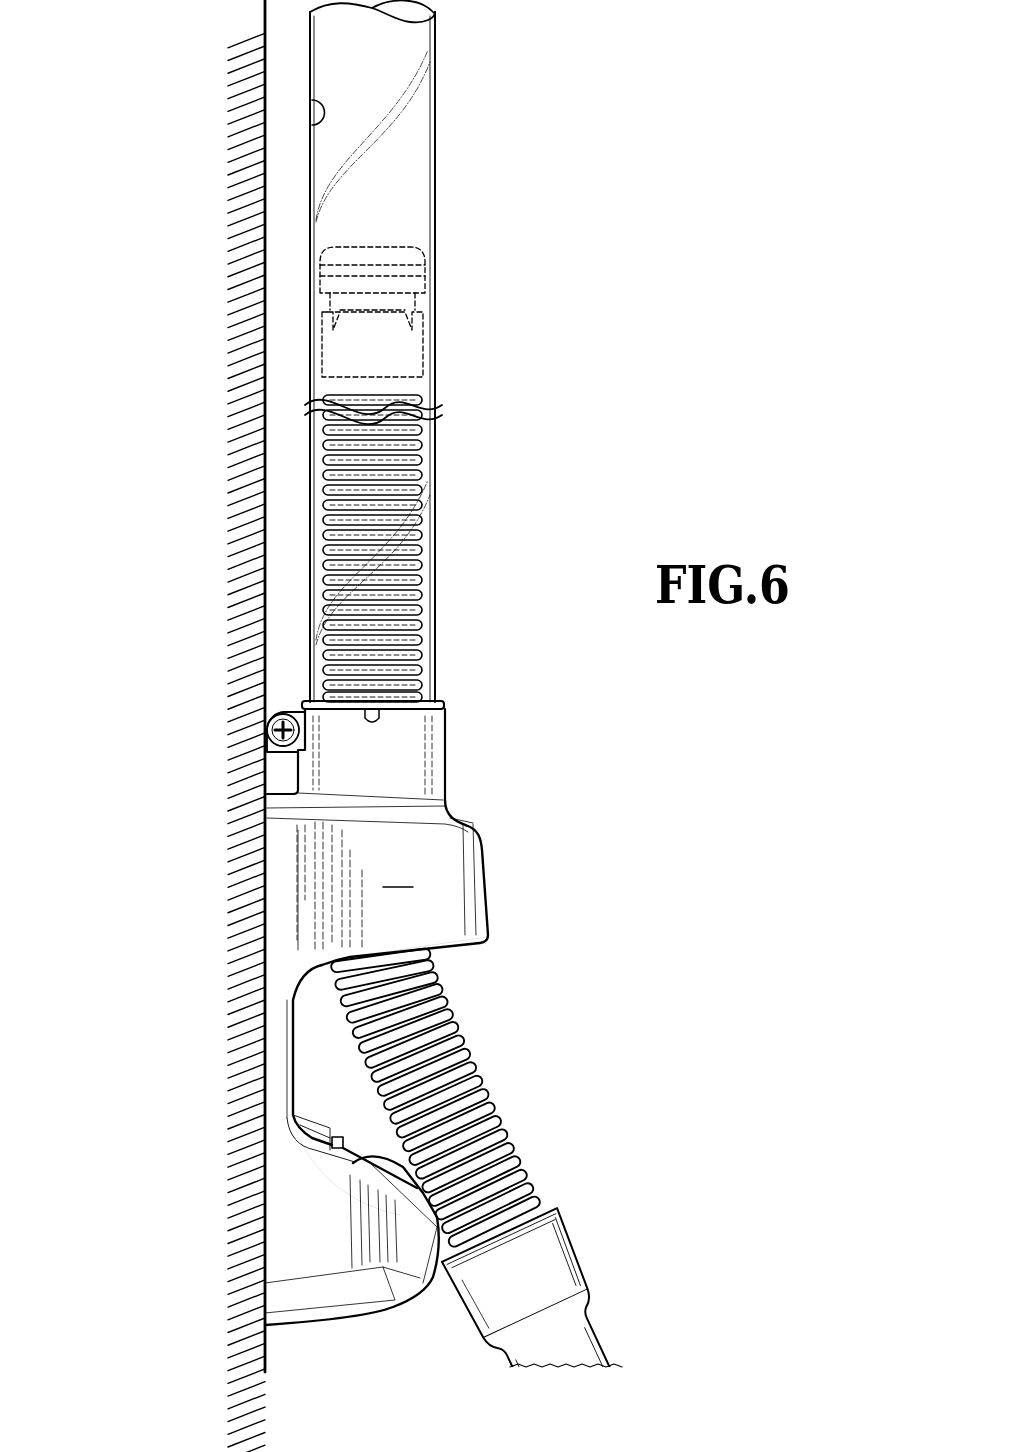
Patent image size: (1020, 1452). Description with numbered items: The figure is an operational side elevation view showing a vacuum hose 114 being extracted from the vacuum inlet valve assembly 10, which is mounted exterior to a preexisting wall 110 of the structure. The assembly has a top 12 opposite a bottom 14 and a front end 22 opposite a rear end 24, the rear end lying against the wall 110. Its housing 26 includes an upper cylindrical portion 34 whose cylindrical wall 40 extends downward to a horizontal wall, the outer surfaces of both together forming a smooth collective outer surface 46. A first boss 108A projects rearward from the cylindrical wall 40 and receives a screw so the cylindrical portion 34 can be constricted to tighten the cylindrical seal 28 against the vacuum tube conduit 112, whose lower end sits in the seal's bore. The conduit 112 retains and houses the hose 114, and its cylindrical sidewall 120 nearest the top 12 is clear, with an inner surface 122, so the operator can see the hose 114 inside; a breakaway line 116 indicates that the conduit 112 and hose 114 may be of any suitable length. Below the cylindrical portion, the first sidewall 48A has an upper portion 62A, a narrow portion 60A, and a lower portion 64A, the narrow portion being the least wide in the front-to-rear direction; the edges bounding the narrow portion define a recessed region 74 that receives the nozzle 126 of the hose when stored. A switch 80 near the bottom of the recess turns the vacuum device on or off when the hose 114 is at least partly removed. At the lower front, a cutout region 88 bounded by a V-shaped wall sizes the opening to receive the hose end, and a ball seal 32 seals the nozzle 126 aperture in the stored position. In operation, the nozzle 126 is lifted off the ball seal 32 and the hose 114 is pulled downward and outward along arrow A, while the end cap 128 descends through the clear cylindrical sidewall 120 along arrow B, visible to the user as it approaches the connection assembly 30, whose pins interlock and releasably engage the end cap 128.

The vacuum inlet valve assembly 10 is at (368, 1062).
The top 12 is at (297, 690).
The bottom 14 is at (514, 1184).
The front end 22 is at (457, 862).
The rear end 24 is at (265, 962).
The housing 26 is at (488, 858).
The cylindrical seal 28 is at (447, 702).
The connection assembly 30 is at (462, 952).
The ball seal 32 is at (514, 1184).
The upper cylindrical portion 34 is at (430, 754).
The cylindrical wall 40 is at (450, 752).
The collective outer surface 46 is at (444, 879).
The first sidewall 48A is at (196, 890).
The upper portion of first sidewall 62A is at (305, 882).
The narrow portion 60A is at (270, 1062).
The lower portion of first sidewall 64A is at (312, 1196).
The recessed region 74 is at (514, 1184).
The switch 80 is at (340, 1132).
The cutout region 88 is at (420, 1218).
The first boss 108A is at (272, 712).
The wall 110 is at (268, 1350).
The vacuum tube conduit 112 is at (466, 351).
The vacuum hose 114 is at (422, 580).
The breakaway line 116 is at (390, 396).
The cylindrical sidewall 120 is at (442, 180).
The inner surface 122 is at (318, 116).
The nozzle 126 is at (578, 1228).
The end cap 128 is at (398, 350).